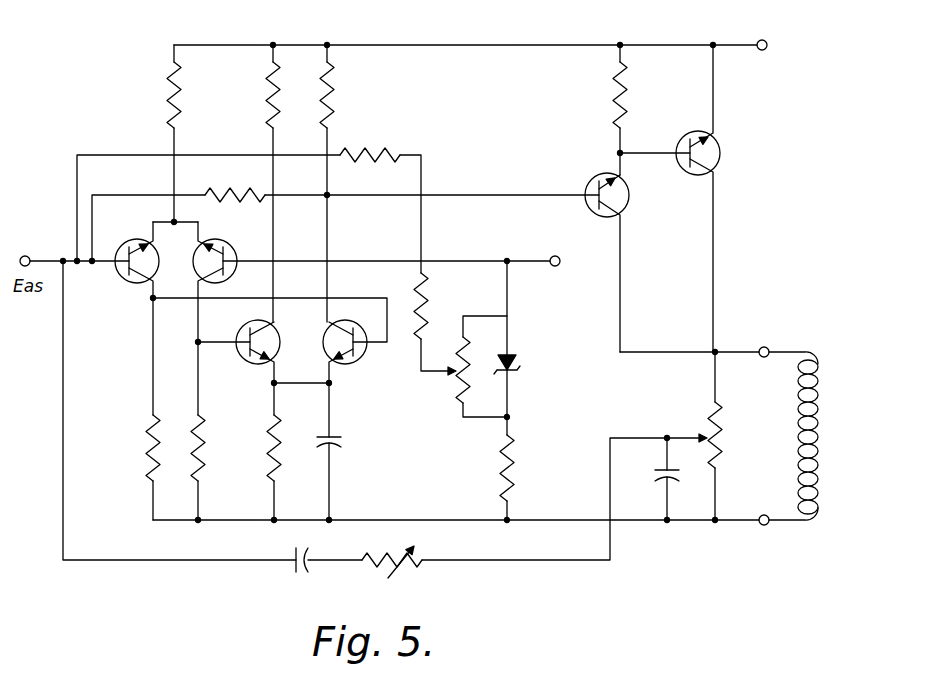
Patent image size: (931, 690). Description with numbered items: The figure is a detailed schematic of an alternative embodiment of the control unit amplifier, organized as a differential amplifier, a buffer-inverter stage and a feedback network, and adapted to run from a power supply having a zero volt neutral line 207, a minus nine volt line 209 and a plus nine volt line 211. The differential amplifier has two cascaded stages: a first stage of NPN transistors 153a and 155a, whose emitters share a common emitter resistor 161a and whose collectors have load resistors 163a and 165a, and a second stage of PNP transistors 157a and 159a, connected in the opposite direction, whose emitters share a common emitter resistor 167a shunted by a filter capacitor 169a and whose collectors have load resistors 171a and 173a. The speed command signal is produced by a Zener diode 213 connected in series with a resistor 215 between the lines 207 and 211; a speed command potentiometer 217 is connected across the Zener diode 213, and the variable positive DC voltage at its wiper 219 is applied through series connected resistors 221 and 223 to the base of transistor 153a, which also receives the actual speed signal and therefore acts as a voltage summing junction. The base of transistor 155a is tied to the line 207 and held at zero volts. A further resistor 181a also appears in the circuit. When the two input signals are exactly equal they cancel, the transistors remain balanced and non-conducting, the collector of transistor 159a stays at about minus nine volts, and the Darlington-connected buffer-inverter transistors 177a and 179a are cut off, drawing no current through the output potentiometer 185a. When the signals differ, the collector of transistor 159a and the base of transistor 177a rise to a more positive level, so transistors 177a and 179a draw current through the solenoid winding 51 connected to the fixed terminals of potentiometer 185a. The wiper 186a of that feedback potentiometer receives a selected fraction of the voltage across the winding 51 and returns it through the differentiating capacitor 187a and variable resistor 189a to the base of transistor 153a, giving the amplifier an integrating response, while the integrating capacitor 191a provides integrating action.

The solenoid winding 51 is at (796, 462).
The transistor 153a is at (120, 278).
The transistor 155a is at (240, 232).
The transistor 157a is at (263, 365).
The transistor 159a is at (348, 366).
The common emitter resistor 161a is at (168, 98).
The load resistor 163a is at (148, 466).
The load resistor 165a is at (206, 446).
The common emitter resistor 167a is at (270, 460).
The filter capacitor 169a is at (340, 446).
The load resistor 171a is at (268, 104).
The load resistor 173a is at (334, 96).
The transistor 177a is at (593, 175).
The transistor 179a is at (720, 145).
The resistor 181a is at (241, 192).
The output potentiometer 185a is at (613, 95).
The wiper 186a is at (690, 434).
The differentiating capacitor 187a is at (292, 570).
The variable resistor 189a is at (422, 570).
The integrating capacitor 191a is at (657, 482).
The zero volt neutral line 207 is at (447, 261).
The minus nine volt line 209 is at (500, 45).
The plus nine volt line 211 is at (183, 522).
The Zener diode 213 is at (516, 372).
The resistor 215 is at (518, 467).
The potentiometer 217 is at (460, 391).
The wiper 219 is at (437, 373).
The resistor 221 is at (428, 306).
The resistor 223 is at (367, 152).